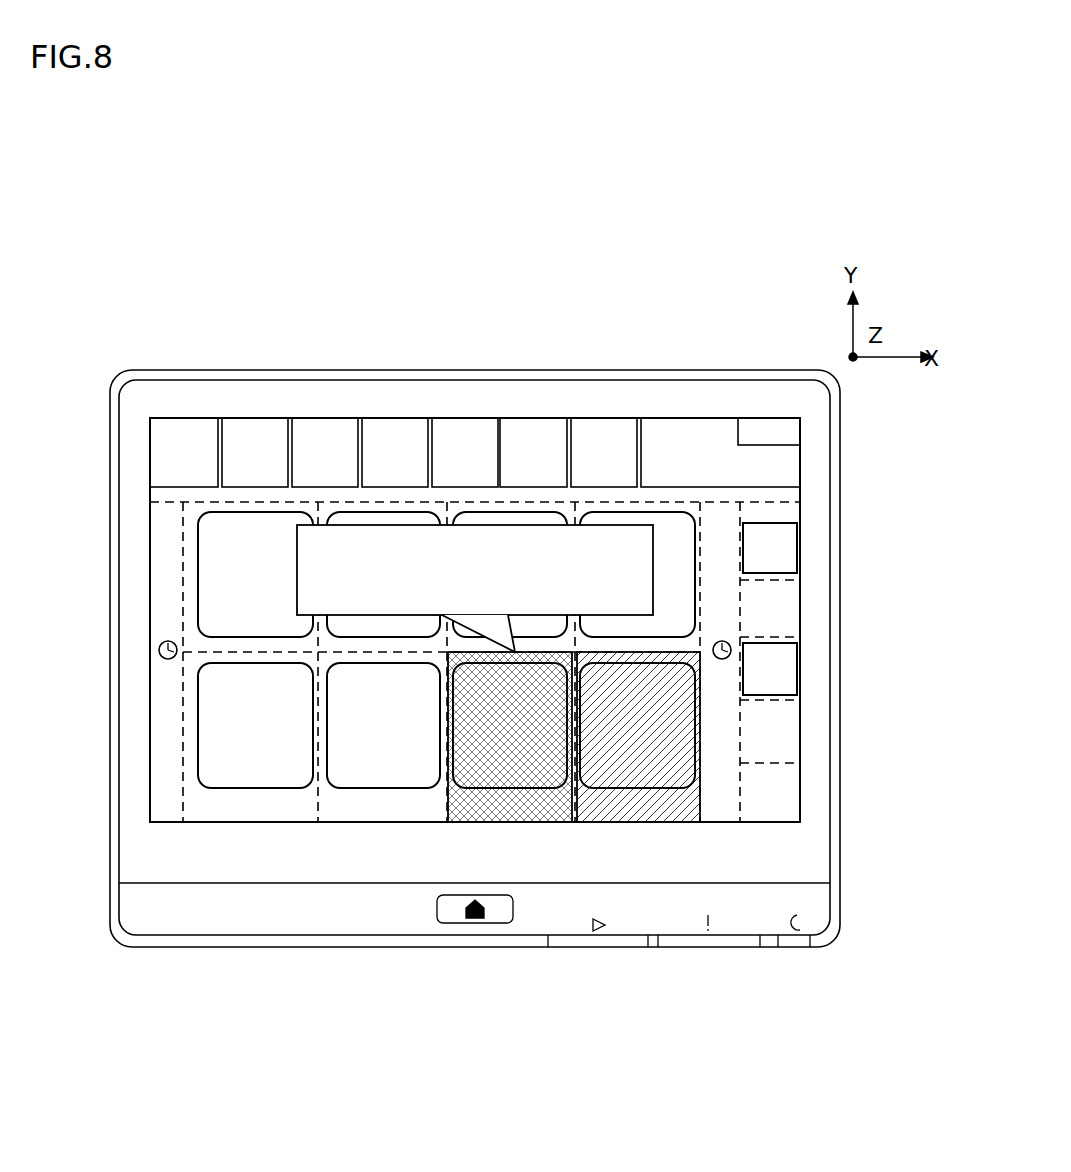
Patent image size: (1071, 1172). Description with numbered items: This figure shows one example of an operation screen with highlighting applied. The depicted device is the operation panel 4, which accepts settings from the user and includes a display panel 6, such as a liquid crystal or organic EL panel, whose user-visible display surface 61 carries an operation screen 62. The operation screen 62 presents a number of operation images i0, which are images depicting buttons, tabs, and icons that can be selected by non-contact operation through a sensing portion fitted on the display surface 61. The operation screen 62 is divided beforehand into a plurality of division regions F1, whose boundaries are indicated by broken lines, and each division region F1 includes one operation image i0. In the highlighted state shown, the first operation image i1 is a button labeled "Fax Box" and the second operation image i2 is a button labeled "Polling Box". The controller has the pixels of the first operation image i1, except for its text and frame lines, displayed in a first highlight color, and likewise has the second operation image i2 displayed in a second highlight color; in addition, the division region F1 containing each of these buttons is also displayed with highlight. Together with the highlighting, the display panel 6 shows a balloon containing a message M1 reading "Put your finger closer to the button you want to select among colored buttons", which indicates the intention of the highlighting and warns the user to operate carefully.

The operation panel 4 is at (113, 368).
The display panel 6 is at (147, 410).
The display surface 61 is at (708, 438).
The operation screen 62 is at (475, 620).
The division region F1 is at (165, 500).
The operation image i0 is at (207, 435).
The first operation image i1 is at (521, 812).
The second operation image i2 is at (655, 812).
The message M1 is at (297, 545).